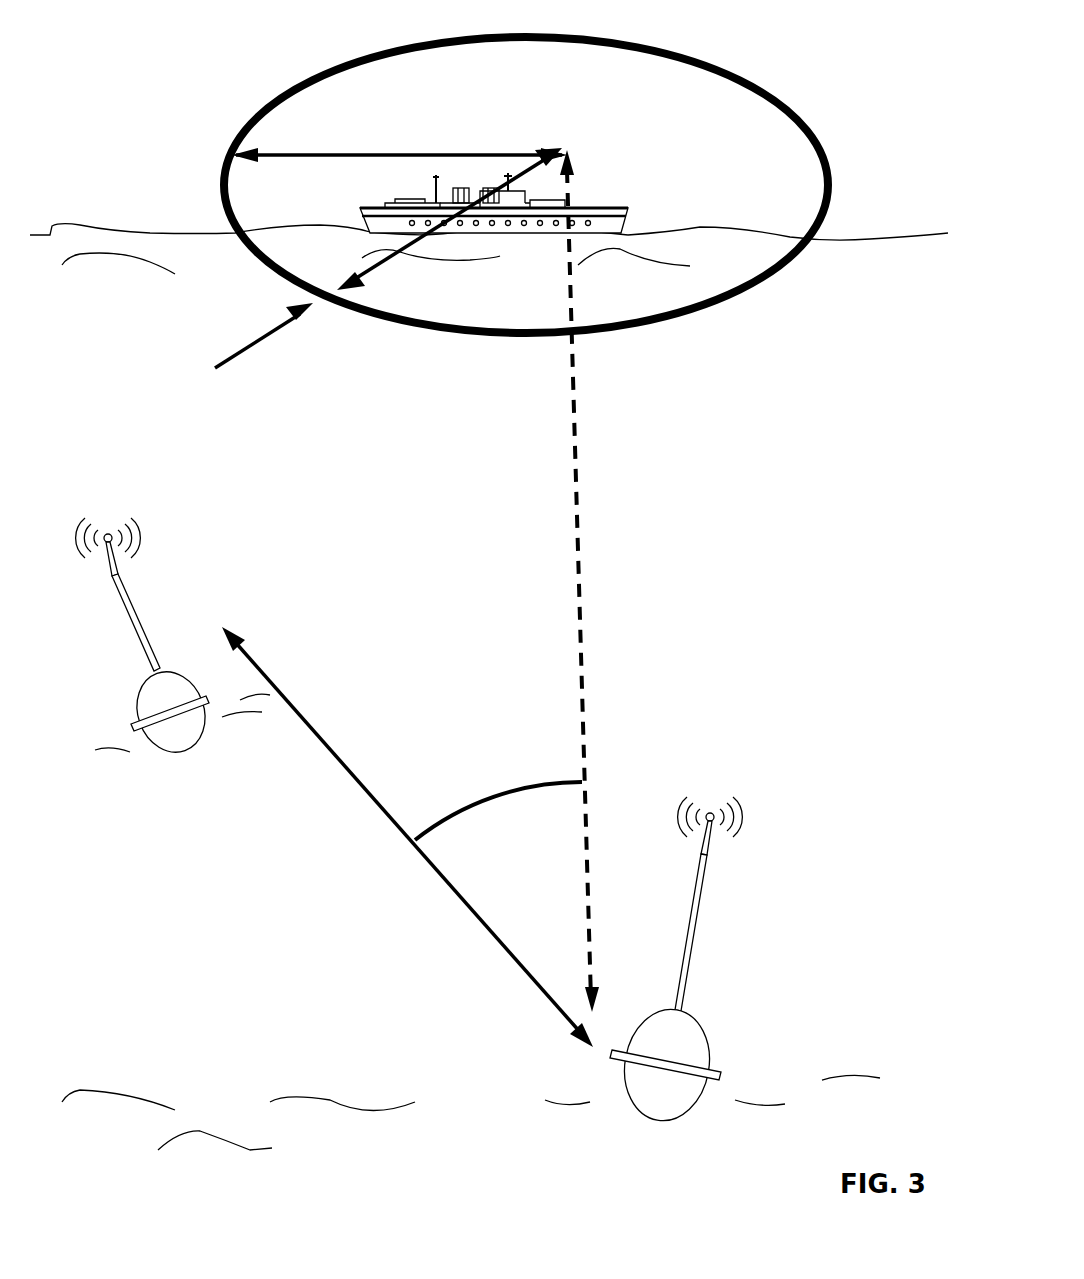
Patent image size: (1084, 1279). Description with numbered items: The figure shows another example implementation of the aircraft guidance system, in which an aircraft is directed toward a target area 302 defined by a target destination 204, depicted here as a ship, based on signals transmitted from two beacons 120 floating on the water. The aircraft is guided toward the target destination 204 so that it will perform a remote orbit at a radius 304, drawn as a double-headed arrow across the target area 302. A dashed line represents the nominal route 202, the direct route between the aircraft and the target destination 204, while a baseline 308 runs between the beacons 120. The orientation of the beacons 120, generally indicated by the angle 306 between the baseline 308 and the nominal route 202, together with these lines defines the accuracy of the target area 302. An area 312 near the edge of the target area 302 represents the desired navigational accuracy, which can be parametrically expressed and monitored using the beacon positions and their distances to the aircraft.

The beacons 120 is at (98, 492).
The nominal route 202 is at (570, 426).
The target destination 204 is at (598, 200).
The target area 302 is at (747, 83).
The radius 304 is at (390, 148).
The angle 306 is at (510, 762).
The baseline 308 is at (333, 748).
The area 312 is at (313, 313).